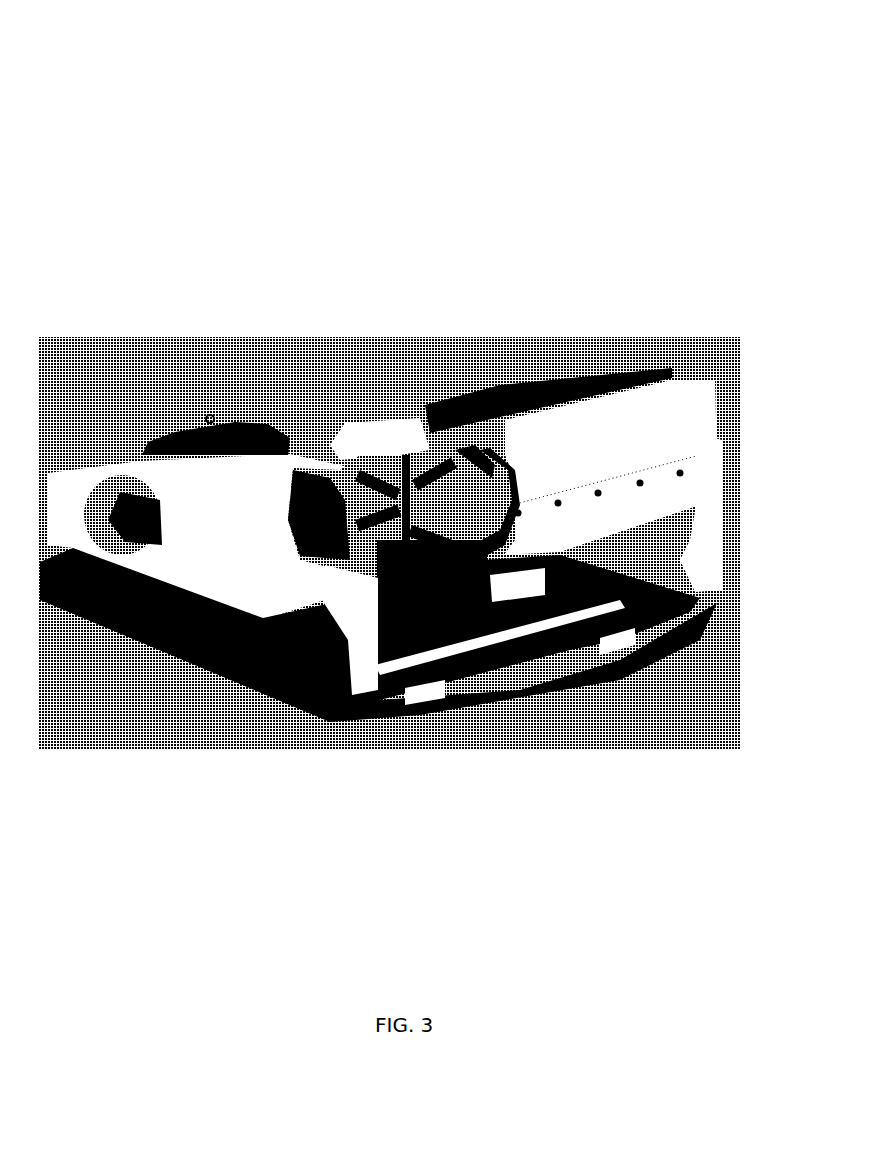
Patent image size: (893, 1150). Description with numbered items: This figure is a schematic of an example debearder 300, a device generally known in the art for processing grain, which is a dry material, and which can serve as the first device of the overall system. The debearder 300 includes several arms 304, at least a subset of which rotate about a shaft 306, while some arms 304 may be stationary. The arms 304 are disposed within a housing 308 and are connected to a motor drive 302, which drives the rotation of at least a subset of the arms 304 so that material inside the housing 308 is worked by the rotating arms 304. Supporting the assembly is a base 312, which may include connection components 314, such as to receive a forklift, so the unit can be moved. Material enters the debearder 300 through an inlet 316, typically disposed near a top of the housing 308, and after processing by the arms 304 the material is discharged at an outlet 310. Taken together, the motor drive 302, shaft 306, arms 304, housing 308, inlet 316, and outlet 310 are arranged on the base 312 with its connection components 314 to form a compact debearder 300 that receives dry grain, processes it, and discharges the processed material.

The debearder 300 is at (156, 110).
The motor drive 302 is at (117, 490).
The arms 304 is at (408, 470).
The shaft 306 is at (460, 450).
The housing 308 is at (632, 462).
The outlet 310 is at (634, 632).
The base 312 is at (255, 662).
The connection components 314 is at (505, 716).
The inlet 316 is at (605, 365).